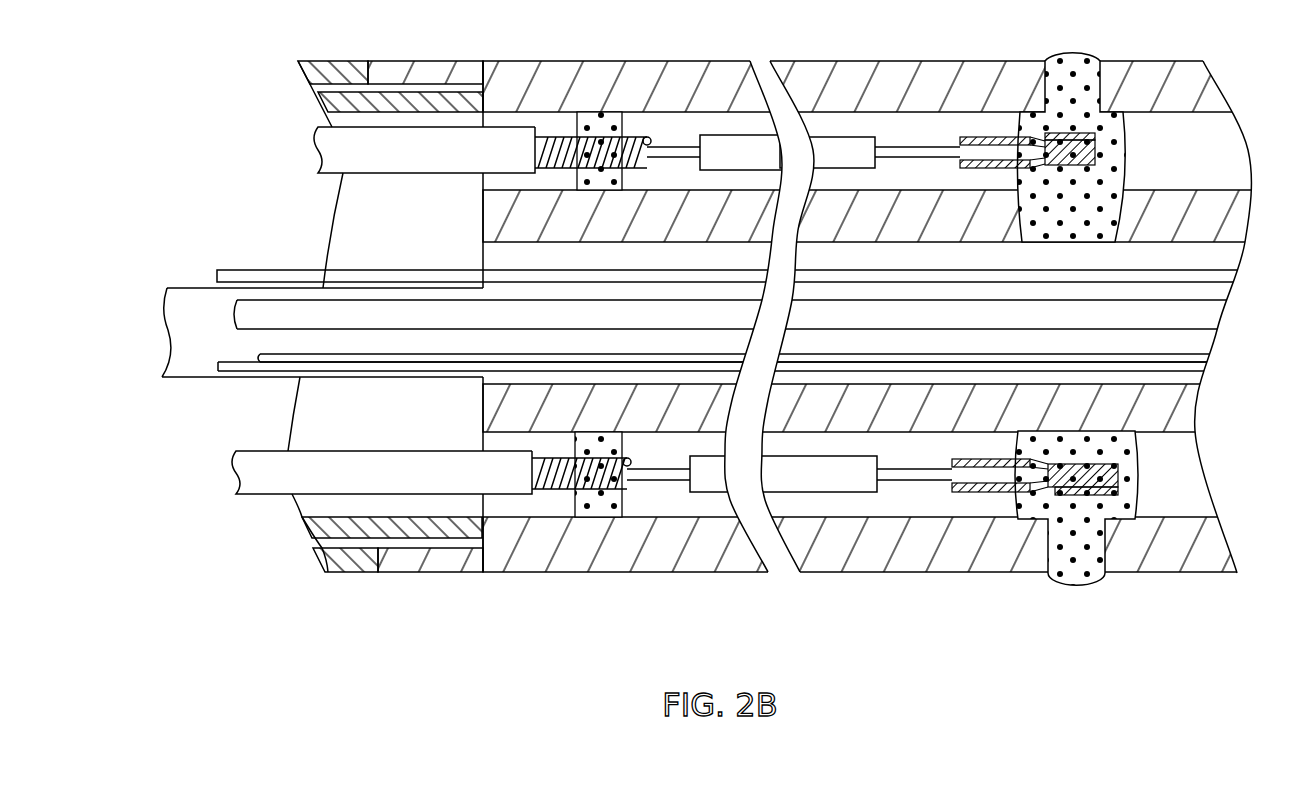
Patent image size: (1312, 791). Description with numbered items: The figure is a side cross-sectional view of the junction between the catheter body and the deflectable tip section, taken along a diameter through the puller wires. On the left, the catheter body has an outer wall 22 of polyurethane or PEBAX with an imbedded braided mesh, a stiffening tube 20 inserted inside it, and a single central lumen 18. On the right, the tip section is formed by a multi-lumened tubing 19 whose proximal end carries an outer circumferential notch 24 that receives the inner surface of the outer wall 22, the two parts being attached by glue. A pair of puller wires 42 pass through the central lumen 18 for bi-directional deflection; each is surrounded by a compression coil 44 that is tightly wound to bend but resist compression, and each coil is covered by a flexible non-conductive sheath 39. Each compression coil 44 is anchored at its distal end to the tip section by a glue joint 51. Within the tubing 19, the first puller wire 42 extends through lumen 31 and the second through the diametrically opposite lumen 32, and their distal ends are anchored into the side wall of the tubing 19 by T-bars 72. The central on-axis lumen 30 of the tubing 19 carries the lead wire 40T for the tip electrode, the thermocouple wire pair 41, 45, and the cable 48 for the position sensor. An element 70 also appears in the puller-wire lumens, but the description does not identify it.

The central lumen 18 is at (398, 235).
The multi-lumened tubing 19 is at (930, 61).
The stiffening tube 20 is at (320, 105).
The outer wall 22 is at (334, 61).
The outer circumferential notch 24 is at (432, 75).
The central on-axis lumen 30 is at (163, 330).
The lumen 31 is at (1255, 115).
The lumen 32 is at (1212, 430).
The non-conductive sheath 39 is at (314, 148).
The lead wire 40T is at (217, 274).
The thermocouple wire 41 is at (260, 356).
The puller wire 42 is at (676, 147).
The compression coil 44 is at (555, 137).
The thermocouple wire 45 is at (237, 371).
The cable 48 is at (237, 312).
The glue joint 51 is at (597, 112).
The slider block 70 is at (838, 137).
The T-bar 72 is at (1072, 130).